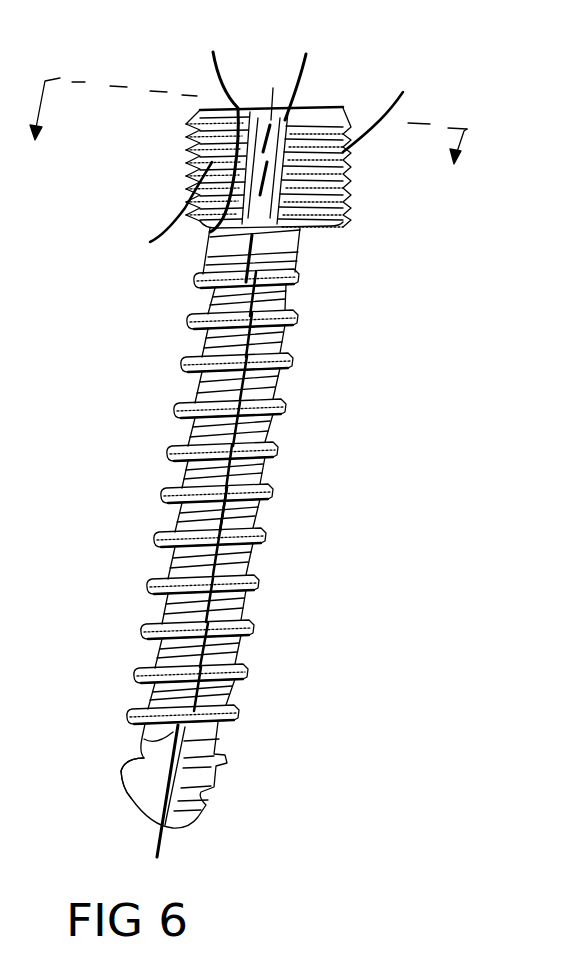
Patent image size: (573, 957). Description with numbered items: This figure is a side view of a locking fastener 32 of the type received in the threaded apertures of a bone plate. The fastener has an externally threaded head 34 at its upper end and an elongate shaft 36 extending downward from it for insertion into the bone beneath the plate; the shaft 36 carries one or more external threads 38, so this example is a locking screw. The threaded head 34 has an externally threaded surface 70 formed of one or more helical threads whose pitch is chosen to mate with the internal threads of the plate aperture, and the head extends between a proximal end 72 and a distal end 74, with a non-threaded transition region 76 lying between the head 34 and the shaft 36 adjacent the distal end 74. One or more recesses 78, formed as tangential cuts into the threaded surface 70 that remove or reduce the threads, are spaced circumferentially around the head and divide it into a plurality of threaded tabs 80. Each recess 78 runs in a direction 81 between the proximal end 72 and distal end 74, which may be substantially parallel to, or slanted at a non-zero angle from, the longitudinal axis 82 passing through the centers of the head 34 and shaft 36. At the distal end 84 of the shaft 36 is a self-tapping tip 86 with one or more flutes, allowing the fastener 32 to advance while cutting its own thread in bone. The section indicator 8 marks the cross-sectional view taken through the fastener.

The section line 8- 8 is at (250, 136).
The locking fastener 32 is at (459, 100).
The threaded head 34 is at (359, 185).
The elongate shaft 36 is at (278, 471).
The external threads 38 is at (115, 783).
The externally threaded surface 70 is at (193, 103).
The proximal end 72 is at (318, 120).
The distal end 74 is at (268, 252).
The non-threaded transition region 76 is at (313, 240).
The recesses 78 is at (305, 74).
The threaded tabs 80 is at (265, 159).
The direction 81 is at (214, 132).
The longitudinal axis 82 is at (273, 383).
The distal end 84 is at (193, 821).
The self-tapping tip 86 is at (147, 796).